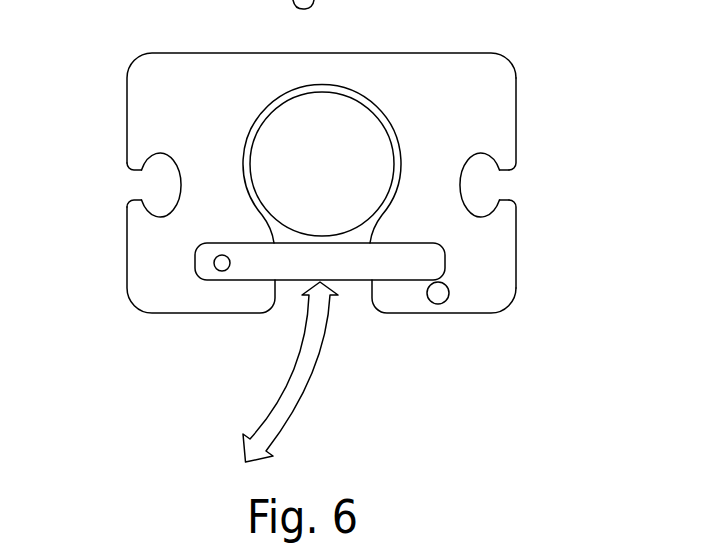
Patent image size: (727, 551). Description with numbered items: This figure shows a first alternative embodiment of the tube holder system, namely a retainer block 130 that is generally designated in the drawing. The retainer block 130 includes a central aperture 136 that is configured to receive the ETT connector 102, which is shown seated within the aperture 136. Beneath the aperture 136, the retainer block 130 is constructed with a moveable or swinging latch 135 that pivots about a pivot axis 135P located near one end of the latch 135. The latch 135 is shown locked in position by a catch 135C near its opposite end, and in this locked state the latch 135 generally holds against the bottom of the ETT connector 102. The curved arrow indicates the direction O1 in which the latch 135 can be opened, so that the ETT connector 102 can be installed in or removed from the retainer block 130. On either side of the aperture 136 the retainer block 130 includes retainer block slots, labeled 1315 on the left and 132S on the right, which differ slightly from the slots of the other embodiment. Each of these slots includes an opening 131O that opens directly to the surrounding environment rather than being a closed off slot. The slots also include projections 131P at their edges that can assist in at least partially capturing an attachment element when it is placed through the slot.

The retainer block 130 is at (502, 53).
The opening 131O is at (153, 189).
The projection 131P is at (507, 172).
The keyhole slot round portion 1315 is at (165, 153).
The retainer block slot 132S is at (480, 153).
The aperture 136 is at (382, 112).
The ETT connector 102 is at (395, 168).
The latch 135 is at (252, 272).
The pivot axis 135P is at (220, 271).
The catch 135C is at (438, 295).
The direction O1 is at (308, 383).